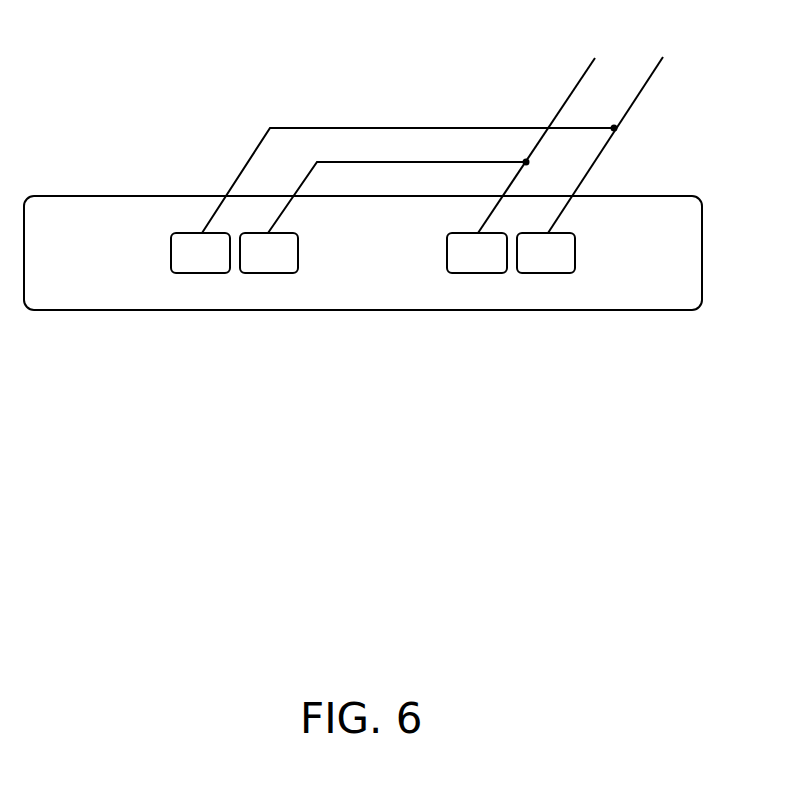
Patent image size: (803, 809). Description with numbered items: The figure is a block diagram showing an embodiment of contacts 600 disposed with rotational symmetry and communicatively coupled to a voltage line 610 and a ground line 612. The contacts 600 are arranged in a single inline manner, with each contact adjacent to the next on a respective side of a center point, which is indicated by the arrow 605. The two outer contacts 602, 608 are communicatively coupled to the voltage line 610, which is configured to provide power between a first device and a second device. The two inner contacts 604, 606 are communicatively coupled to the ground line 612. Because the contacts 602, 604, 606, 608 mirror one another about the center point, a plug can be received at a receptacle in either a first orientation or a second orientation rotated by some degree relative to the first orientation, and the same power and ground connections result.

The contacts 600 is at (632, 376).
The contact 602 is at (199, 273).
The contact 604 is at (262, 273).
The arrow 605 is at (367, 238).
The contact 606 is at (482, 273).
The contact 608 is at (543, 273).
The voltage line 610 is at (641, 90).
The ground line 612 is at (593, 62).